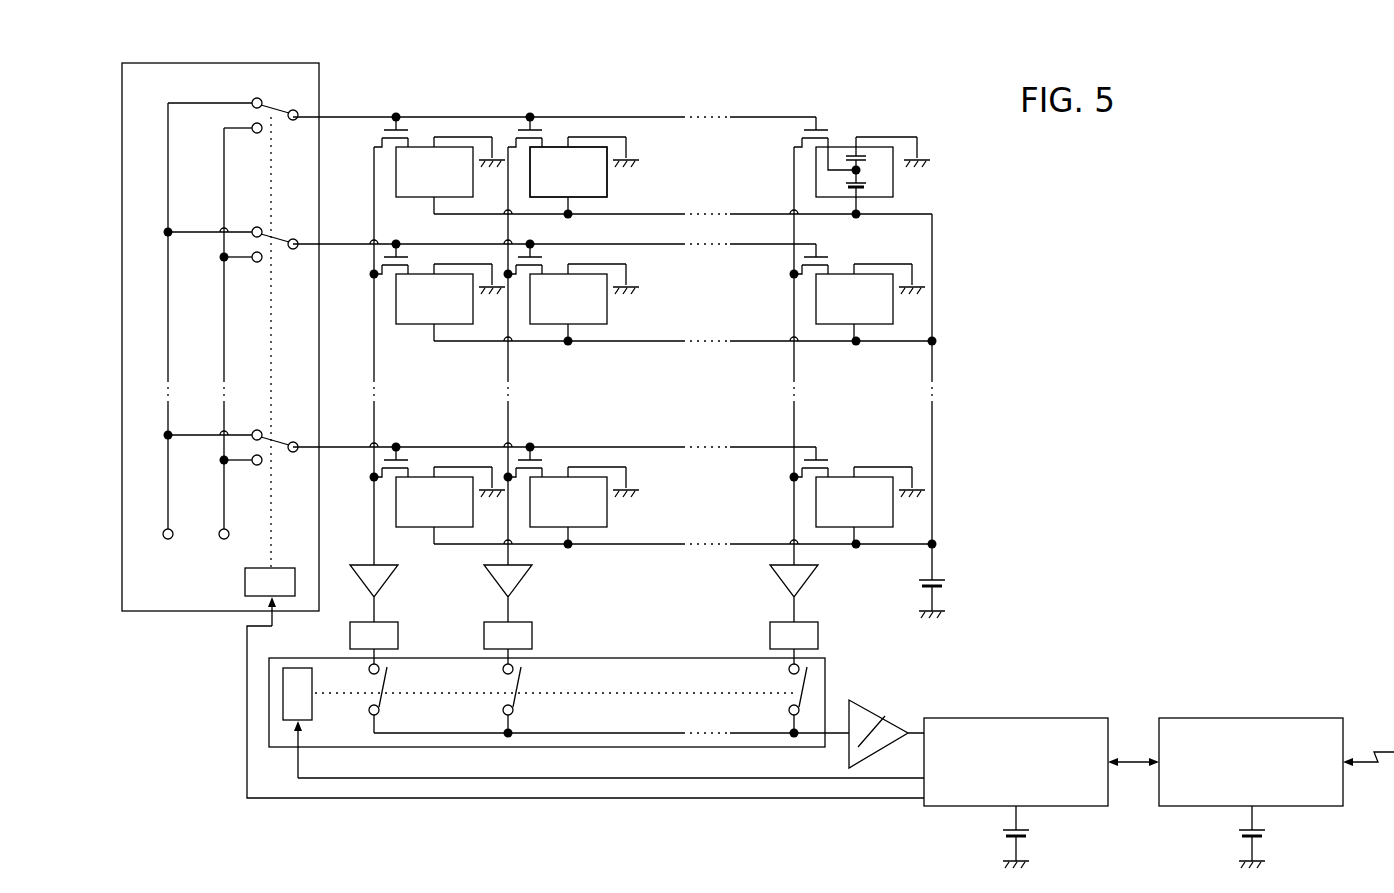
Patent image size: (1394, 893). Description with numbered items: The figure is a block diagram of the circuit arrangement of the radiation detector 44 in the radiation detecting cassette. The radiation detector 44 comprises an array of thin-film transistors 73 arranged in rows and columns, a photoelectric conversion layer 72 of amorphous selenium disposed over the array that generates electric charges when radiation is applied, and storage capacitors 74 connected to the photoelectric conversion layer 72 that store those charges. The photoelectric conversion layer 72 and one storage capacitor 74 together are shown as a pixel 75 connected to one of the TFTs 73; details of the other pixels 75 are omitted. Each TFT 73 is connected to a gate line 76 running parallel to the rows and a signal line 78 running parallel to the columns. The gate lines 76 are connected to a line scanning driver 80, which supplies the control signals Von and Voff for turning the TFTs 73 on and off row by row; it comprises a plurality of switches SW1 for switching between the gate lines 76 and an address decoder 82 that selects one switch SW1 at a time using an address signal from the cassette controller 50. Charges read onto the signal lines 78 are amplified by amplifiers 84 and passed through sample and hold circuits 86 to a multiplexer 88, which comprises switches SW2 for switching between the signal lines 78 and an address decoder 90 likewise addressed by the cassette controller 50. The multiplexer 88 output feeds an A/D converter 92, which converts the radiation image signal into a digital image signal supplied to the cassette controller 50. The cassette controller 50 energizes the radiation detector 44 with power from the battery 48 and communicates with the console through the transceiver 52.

The radiation detector 44 is at (615, 318).
The battery 48 is at (945, 575).
The cassette controller 50 is at (1088, 718).
The transceiver 52 is at (1315, 718).
The photoelectric conversion layer 72 is at (868, 185).
The thin-film transistor 73 is at (801, 133).
The storage capacitor 74 is at (869, 160).
The pixel 75 is at (609, 193).
The gate line 76 is at (763, 117).
The signal line 78 is at (793, 170).
The line scanning driver 80 is at (121, 100).
The address decoder 82 is at (245, 585).
The amplifier 84 is at (531, 580).
The sample and hold circuit 86 is at (533, 635).
The multiplexer 88 is at (680, 658).
The address decoder 90 is at (313, 703).
The A/D converter 92 is at (892, 720).
The switch SW1 is at (278, 105).
The switch SW2 is at (810, 683).